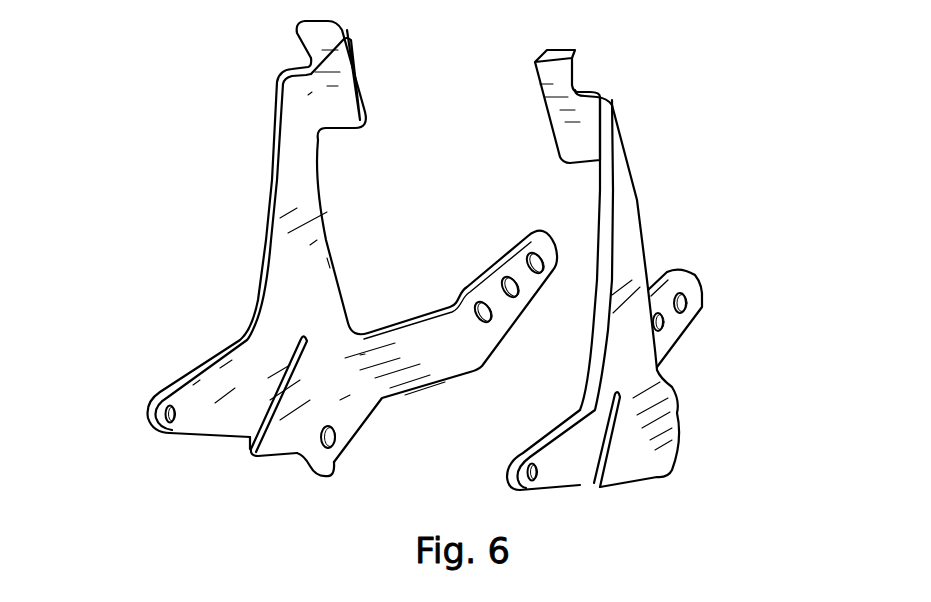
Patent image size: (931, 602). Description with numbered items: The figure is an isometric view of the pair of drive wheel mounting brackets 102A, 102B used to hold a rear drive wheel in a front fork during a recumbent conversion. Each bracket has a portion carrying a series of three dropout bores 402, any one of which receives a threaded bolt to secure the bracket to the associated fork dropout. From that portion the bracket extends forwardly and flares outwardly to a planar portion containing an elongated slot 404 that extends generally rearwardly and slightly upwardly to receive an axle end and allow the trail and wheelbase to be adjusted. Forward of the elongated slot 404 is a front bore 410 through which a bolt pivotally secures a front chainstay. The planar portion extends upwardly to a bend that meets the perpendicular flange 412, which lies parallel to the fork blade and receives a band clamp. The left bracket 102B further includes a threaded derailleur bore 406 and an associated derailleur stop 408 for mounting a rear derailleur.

The drive wheel mounting bracket 102A is at (677, 175).
The drive wheel mounting bracket 102B is at (217, 148).
The dropout bores 402 is at (477, 300).
The elongated slot 404 is at (275, 406).
The threaded derailleur bore 406 is at (340, 438).
The derailleur stop 408 is at (333, 471).
The front bore 410 is at (165, 413).
The perpendicular flange 412 is at (347, 50).